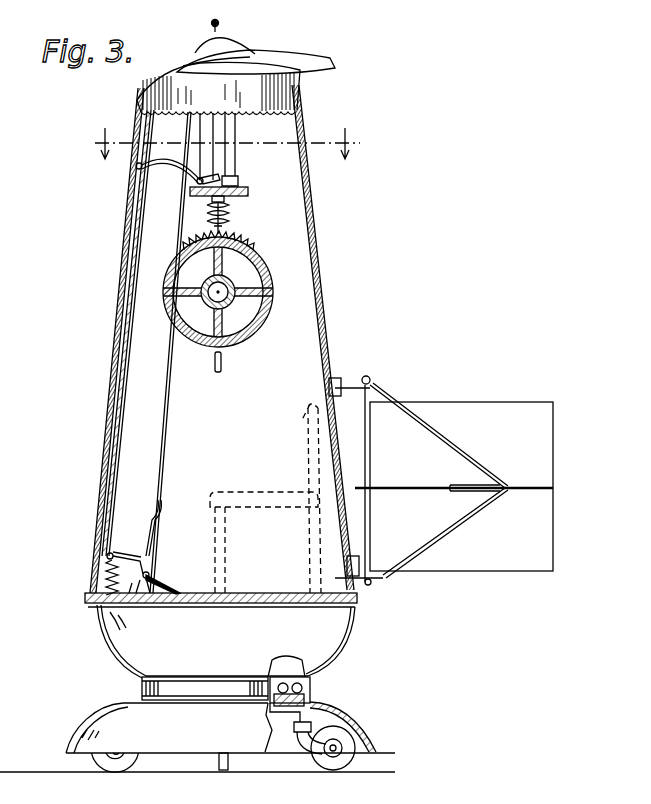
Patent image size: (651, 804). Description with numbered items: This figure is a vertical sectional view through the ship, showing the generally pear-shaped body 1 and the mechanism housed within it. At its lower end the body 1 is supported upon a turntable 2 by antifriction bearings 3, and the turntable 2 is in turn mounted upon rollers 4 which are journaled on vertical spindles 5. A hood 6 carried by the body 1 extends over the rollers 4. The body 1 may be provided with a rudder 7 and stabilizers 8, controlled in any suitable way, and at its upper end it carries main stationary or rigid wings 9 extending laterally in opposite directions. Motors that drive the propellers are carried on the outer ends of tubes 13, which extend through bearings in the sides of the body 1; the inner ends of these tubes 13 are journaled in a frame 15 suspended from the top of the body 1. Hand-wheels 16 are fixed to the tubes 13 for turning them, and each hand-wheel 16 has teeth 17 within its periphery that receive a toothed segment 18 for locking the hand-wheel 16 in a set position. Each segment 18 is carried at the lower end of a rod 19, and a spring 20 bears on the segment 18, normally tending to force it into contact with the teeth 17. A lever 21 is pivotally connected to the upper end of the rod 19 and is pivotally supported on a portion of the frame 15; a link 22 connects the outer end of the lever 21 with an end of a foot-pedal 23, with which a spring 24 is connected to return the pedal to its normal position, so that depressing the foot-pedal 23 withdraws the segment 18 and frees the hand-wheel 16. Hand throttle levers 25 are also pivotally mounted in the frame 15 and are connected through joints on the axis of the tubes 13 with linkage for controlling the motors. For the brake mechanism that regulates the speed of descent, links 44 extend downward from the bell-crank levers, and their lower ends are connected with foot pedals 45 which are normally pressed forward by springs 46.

The body 1 is at (318, 295).
The turntable 2 is at (312, 699).
The antifriction bearings 3 is at (310, 683).
The rollers 4 is at (366, 756).
The vertical spindles 5 is at (376, 712).
The hood 6 is at (362, 741).
The rudder 7 is at (545, 434).
The stabilizers 8 is at (535, 487).
The main stationary wings 9 is at (290, 60).
The tubes 13 is at (232, 289).
The frame 15 is at (236, 168).
The hand-wheels 16 is at (250, 321).
The teeth 17 is at (262, 312).
The toothed segments 18 is at (246, 239).
The rod 19 is at (230, 201).
The spring 20 is at (233, 218).
The lever 21 is at (190, 170).
The link 22 is at (120, 396).
The foot-pedal 23 is at (160, 516).
The spring 24 is at (104, 577).
The hand throttle levers 25 is at (224, 362).
The links 44 is at (168, 425).
The foot pedals 45 is at (148, 580).
The springs 46 is at (166, 606).